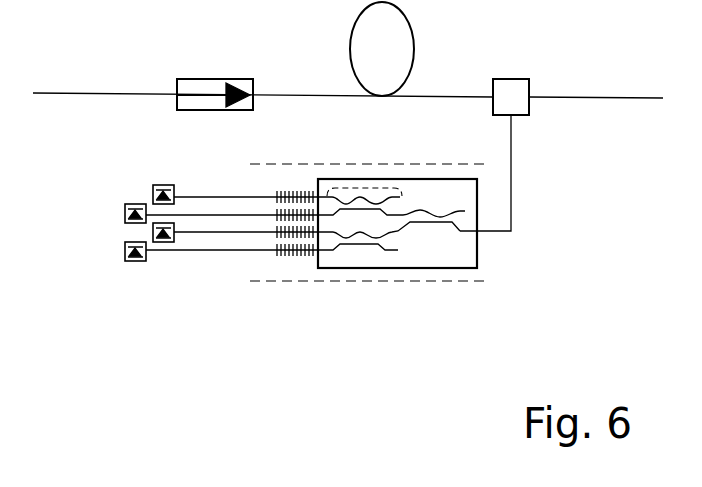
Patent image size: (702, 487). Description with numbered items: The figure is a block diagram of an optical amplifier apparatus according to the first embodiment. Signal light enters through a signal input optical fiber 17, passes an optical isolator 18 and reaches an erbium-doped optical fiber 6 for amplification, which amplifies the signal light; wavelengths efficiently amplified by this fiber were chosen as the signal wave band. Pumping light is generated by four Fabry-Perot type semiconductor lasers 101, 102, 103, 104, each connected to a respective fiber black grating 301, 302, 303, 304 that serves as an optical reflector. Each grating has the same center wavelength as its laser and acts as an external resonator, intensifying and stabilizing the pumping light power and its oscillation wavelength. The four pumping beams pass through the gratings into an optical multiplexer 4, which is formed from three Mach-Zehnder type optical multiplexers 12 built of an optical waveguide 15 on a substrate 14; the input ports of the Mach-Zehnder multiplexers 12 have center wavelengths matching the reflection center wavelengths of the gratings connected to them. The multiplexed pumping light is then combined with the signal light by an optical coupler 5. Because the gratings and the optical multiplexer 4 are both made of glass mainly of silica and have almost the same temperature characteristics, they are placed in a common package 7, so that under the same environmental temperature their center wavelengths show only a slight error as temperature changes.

The optical multiplexer 4 is at (342, 268).
The optical coupler 5 is at (510, 79).
The erbium-doped optical fiber 6 is at (413, 30).
The package 7 is at (473, 283).
The Mach-Zehnder type optical multiplexer 12 is at (360, 190).
The substrate 14 is at (477, 250).
The optical waveguide 15 is at (403, 230).
The signal input optical fiber 17 is at (110, 93).
The optical isolator 18 is at (213, 80).
The Fabry-Perot type semiconductor laser 101 is at (152, 187).
The Fabry-Perot type semiconductor laser 102 is at (125, 210).
The Fabry-Perot type semiconductor laser 103 is at (152, 232).
The Fabry-Perot type semiconductor laser 104 is at (125, 248).
The fiber black grating 301 is at (283, 191).
The fiber black grating 302 is at (277, 212).
The fiber black grating 303 is at (275, 234).
The fiber black grating 304 is at (287, 255).